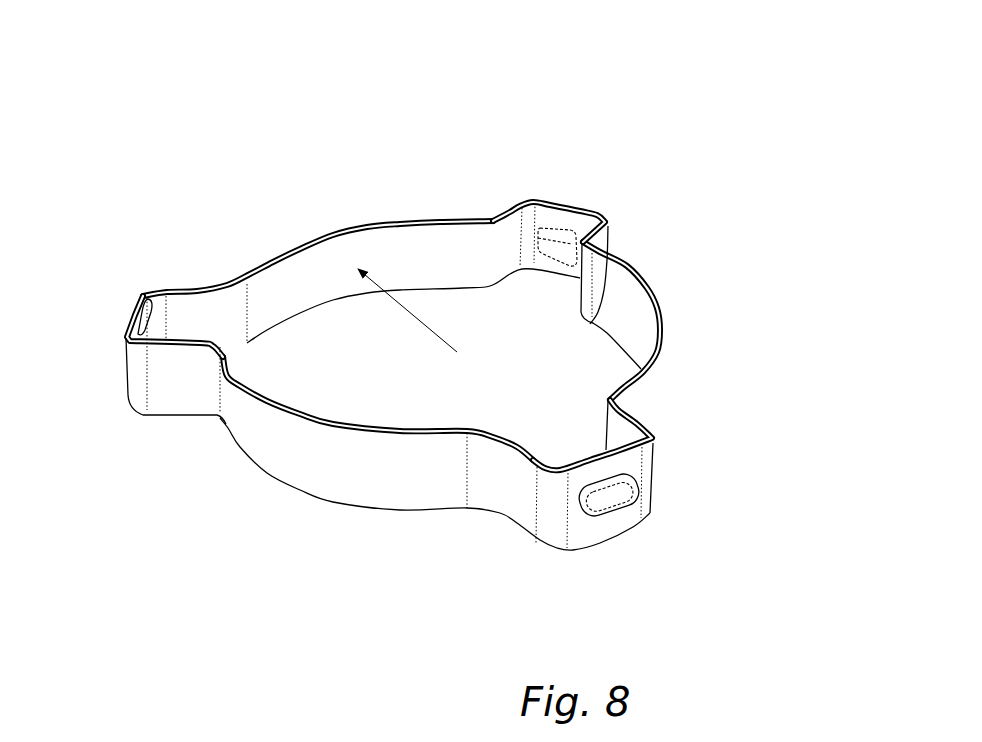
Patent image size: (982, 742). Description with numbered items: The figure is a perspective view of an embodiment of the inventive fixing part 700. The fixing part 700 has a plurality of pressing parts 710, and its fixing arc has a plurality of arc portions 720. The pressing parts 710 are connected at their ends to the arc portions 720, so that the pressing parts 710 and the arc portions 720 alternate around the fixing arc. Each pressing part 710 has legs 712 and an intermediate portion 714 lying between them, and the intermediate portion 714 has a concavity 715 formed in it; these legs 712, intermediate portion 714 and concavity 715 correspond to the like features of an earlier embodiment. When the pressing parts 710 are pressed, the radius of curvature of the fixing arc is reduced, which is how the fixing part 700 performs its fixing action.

The fixing part 700 is at (562, 101).
The pressing part 710 is at (557, 188).
The leg 712 is at (190, 289).
The intermediate portion 714 is at (541, 201).
The concavity 715 is at (140, 296).
The arc portion 720 is at (323, 235).